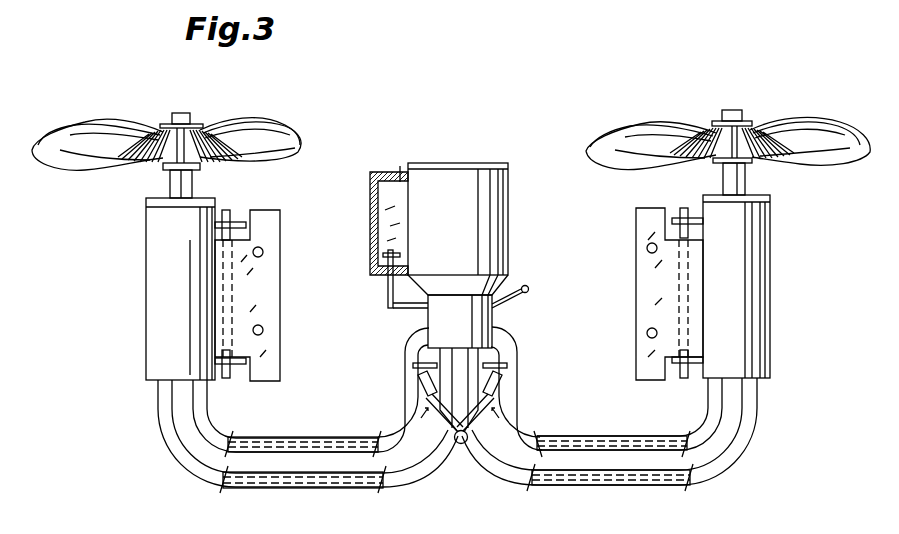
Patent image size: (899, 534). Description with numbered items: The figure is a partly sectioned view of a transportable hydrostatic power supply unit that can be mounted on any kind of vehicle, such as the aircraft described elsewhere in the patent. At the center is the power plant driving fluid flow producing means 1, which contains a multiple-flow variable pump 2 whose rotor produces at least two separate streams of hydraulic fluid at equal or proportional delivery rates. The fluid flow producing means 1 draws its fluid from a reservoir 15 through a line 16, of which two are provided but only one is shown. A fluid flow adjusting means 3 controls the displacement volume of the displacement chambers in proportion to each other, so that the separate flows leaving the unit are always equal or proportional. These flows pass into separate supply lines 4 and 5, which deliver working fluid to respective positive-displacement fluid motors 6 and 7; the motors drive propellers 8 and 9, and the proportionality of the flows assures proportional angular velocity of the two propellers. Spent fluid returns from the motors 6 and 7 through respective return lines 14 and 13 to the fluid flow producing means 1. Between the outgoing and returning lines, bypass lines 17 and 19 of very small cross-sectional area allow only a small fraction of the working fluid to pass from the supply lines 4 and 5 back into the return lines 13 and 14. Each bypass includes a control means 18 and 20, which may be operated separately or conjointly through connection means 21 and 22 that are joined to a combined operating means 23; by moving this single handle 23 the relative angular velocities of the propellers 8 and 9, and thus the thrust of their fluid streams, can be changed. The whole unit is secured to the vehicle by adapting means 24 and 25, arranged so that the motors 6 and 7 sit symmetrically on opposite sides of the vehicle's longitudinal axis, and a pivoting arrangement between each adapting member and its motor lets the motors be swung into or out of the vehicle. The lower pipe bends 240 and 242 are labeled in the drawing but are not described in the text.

The fluid flow producing means 1 is at (445, 168).
The multiple-flow variable pump 2 is at (440, 313).
The fluid flow adjusting means 3 is at (523, 280).
The supply line 4 is at (663, 440).
The supply line 5 is at (255, 440).
The positive-displacement fluid motor 6 is at (165, 270).
The positive-displacement fluid motor 7 is at (757, 350).
The propeller 8 is at (80, 133).
The propeller 9 is at (645, 135).
The return line 13 is at (653, 488).
The return line 14 is at (250, 490).
The reservoir 15 is at (375, 232).
The line 16 is at (392, 293).
The bypass line 17 is at (508, 374).
The control means 18 is at (508, 368).
The bypass line 19 is at (420, 367).
The control means 20 is at (420, 380).
The connection means 21 is at (508, 396).
The connection means 22 is at (422, 398).
The combined operating means 23 is at (462, 447).
The left outer pipe 240 is at (197, 455).
The right outer pipe 242 is at (658, 454).
The adapting means 24 is at (640, 287).
The adapting means 25 is at (272, 293).